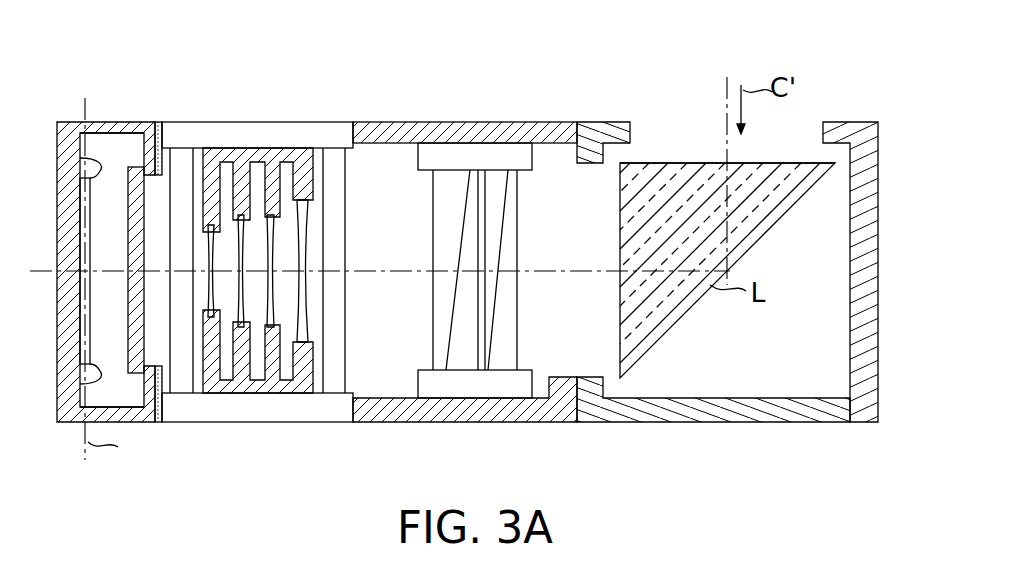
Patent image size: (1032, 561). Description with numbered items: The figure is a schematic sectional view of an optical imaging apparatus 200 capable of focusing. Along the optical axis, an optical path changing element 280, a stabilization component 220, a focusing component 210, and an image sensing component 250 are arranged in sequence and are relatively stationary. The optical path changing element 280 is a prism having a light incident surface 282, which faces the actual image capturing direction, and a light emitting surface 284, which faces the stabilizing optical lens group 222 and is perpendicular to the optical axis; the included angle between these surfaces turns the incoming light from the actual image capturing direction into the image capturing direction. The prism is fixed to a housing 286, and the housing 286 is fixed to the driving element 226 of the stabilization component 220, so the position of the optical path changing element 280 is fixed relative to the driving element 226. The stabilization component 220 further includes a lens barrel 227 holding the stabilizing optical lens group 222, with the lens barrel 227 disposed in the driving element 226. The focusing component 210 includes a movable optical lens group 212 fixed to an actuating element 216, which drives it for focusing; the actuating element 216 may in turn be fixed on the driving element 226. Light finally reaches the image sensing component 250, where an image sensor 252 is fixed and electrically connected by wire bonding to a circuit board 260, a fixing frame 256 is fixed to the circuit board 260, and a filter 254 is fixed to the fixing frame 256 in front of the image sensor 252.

The optical imaging apparatus capable of focusing 200 is at (898, 104).
The focusing component 210 is at (347, 72).
The movable optical lens group 212 is at (245, 210).
The actuating element 216 is at (316, 130).
The stabilization component 220 is at (542, 72).
The stabilizing optical lens group 222 is at (472, 197).
The driving element 226 is at (393, 130).
The lens barrel 227 is at (507, 155).
The image sensing component 250 is at (203, 72).
The image sensor 252 is at (82, 198).
The filter 254 is at (145, 197).
The fixing frame 256 is at (118, 128).
The circuit board 260 is at (65, 387).
The optical path changing element 280 is at (752, 247).
The light incident surface 282 is at (690, 163).
The light emitting surface 284 is at (620, 197).
The housing 286 is at (722, 400).